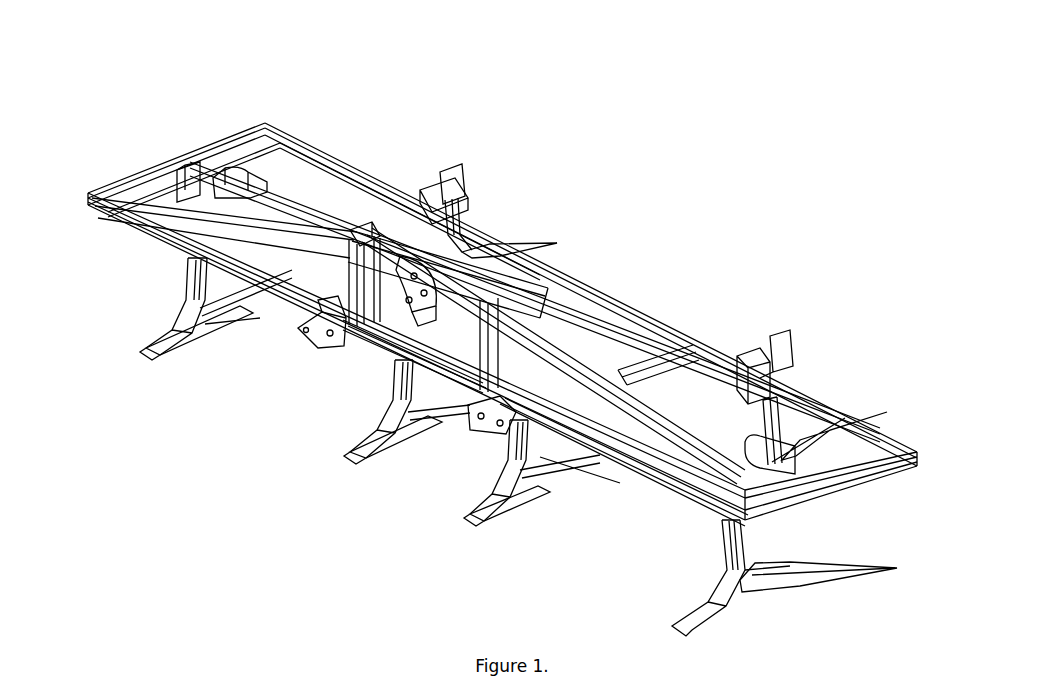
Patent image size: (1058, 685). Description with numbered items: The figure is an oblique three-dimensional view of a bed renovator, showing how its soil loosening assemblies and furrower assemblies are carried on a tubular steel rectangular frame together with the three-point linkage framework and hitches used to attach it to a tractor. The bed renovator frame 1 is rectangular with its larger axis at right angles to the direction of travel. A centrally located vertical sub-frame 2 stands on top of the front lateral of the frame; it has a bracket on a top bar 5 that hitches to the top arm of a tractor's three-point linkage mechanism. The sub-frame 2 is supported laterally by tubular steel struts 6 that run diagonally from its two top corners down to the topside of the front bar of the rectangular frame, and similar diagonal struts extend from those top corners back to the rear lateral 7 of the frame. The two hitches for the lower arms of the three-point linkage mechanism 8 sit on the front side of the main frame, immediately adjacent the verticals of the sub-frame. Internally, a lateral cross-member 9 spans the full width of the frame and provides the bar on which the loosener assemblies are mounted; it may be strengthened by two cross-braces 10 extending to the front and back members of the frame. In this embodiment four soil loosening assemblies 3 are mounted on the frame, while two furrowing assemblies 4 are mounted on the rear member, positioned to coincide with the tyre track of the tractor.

The bed renovator frame 1 is at (325, 153).
The vertical sub-frame 2 is at (358, 232).
The soil loosening assembly 3 is at (758, 578).
The furrowing assembly 4 is at (478, 272).
The top bar 5 is at (425, 288).
The tubular steel struts 6 is at (543, 340).
The rear lateral 7 is at (617, 322).
The hitches for the lower arms of the three-point linkage 8 is at (308, 328).
The lateral cross-member 9 is at (652, 410).
The cross-braces 10 is at (675, 367).